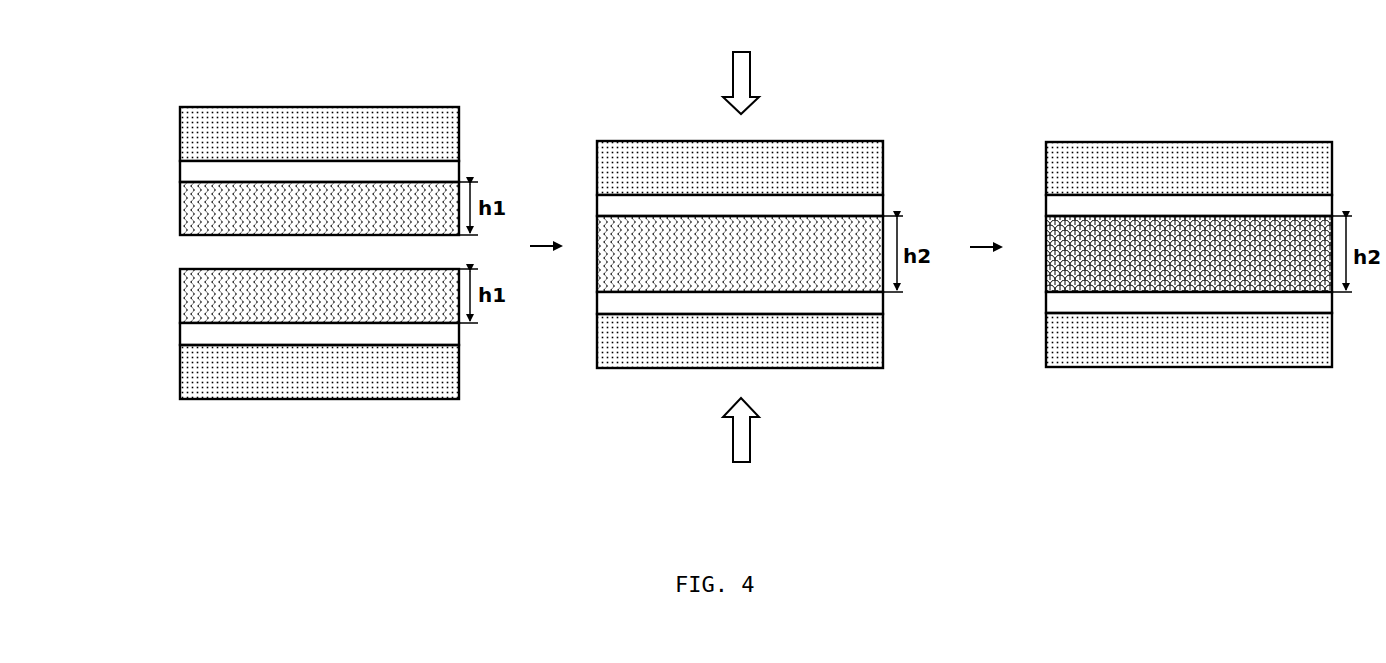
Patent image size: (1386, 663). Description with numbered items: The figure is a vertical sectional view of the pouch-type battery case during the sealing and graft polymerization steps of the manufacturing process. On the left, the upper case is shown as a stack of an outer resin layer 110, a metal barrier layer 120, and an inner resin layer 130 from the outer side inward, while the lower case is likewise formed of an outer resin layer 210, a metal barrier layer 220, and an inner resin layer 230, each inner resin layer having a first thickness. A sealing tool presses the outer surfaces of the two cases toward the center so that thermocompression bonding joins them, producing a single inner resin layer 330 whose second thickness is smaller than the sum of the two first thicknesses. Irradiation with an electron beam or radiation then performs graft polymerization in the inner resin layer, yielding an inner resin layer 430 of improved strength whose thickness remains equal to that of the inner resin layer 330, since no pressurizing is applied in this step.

The outer resin layer 110 is at (310, 112).
The metal barrier layer 120 is at (188, 172).
The inner resin layer 130 is at (180, 210).
The outer resin layer 210 is at (223, 392).
The metal barrier layer 220 is at (183, 335).
The inner resin layer 230 is at (180, 290).
The inner resin layer 330 is at (750, 223).
The inner resin layer 430 is at (1102, 222).